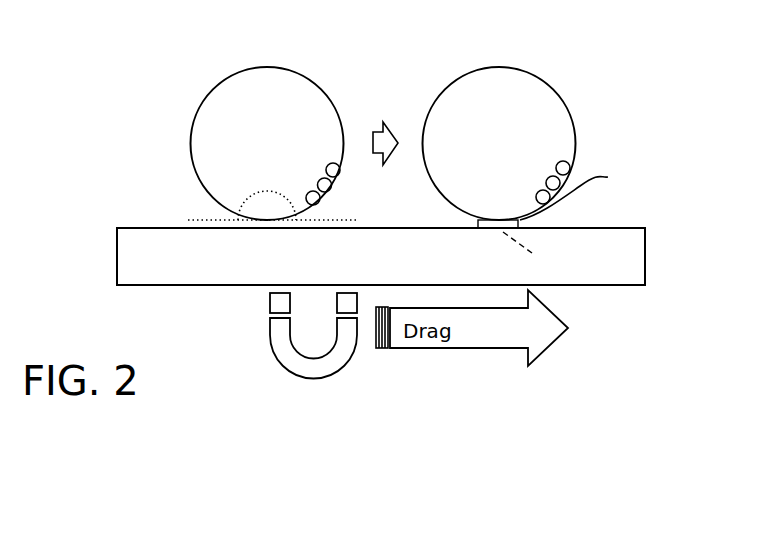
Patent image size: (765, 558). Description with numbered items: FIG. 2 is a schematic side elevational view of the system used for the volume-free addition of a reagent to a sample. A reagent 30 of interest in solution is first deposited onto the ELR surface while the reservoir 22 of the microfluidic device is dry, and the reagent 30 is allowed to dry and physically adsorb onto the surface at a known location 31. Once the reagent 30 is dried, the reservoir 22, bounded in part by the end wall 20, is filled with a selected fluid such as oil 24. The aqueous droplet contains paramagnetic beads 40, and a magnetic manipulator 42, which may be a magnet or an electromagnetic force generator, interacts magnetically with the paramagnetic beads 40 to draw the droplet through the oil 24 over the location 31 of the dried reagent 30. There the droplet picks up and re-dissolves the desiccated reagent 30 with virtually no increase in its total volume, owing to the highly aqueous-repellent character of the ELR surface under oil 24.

The second end wall 20 is at (127, 228).
The reservoir 22 is at (404, 87).
The oil 24 is at (160, 48).
The reagent 30 is at (580, 193).
The location 31 is at (495, 240).
The paramagnetic beads 40 is at (334, 182).
The magnetic manipulator 42 is at (308, 378).